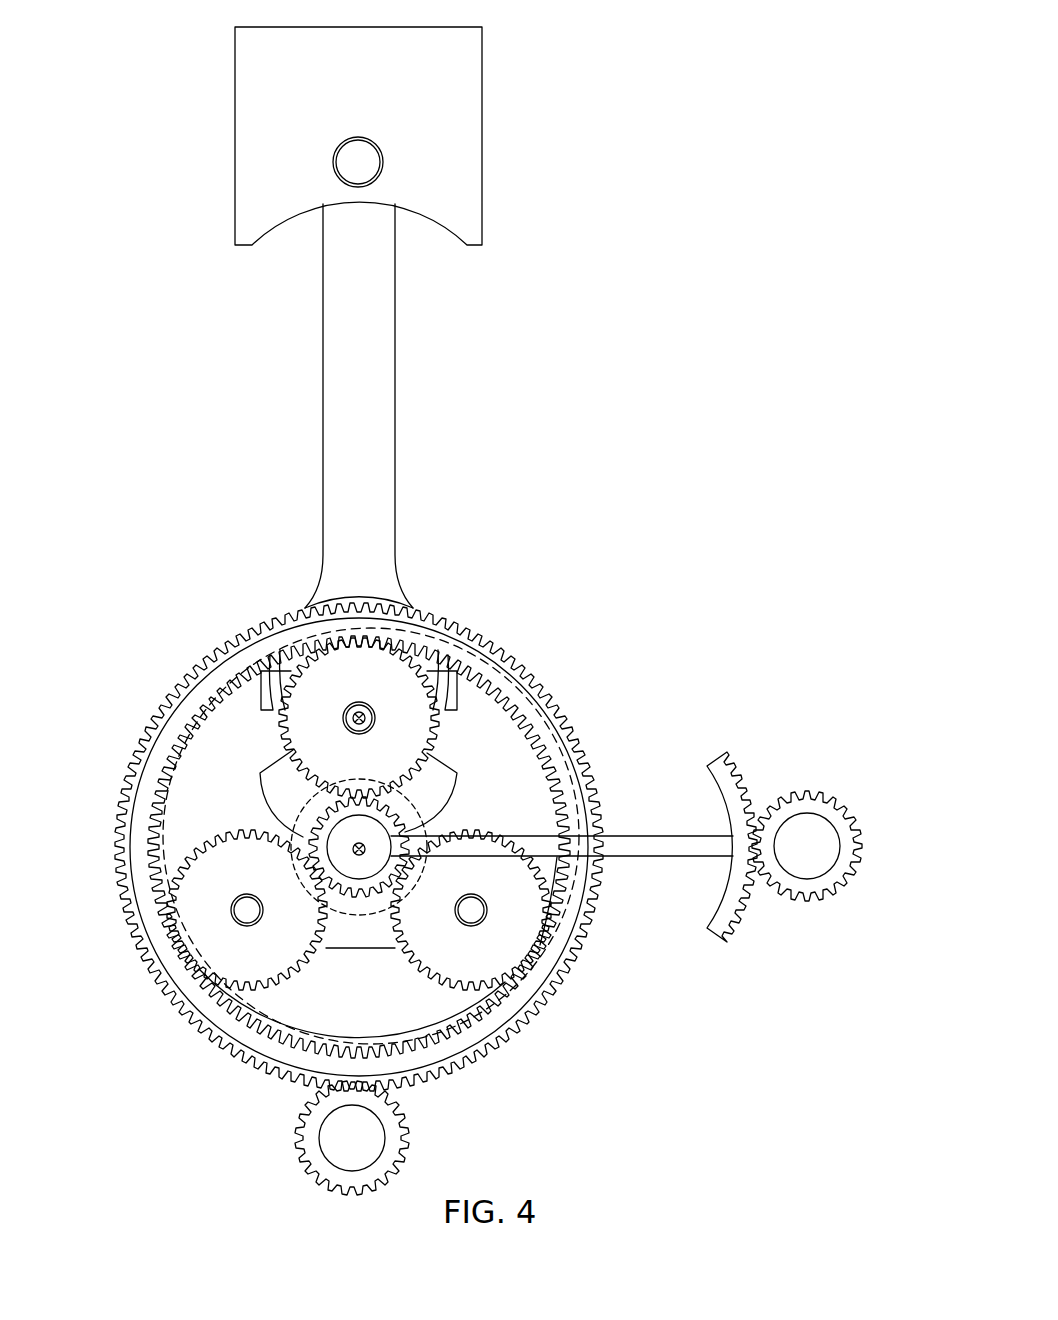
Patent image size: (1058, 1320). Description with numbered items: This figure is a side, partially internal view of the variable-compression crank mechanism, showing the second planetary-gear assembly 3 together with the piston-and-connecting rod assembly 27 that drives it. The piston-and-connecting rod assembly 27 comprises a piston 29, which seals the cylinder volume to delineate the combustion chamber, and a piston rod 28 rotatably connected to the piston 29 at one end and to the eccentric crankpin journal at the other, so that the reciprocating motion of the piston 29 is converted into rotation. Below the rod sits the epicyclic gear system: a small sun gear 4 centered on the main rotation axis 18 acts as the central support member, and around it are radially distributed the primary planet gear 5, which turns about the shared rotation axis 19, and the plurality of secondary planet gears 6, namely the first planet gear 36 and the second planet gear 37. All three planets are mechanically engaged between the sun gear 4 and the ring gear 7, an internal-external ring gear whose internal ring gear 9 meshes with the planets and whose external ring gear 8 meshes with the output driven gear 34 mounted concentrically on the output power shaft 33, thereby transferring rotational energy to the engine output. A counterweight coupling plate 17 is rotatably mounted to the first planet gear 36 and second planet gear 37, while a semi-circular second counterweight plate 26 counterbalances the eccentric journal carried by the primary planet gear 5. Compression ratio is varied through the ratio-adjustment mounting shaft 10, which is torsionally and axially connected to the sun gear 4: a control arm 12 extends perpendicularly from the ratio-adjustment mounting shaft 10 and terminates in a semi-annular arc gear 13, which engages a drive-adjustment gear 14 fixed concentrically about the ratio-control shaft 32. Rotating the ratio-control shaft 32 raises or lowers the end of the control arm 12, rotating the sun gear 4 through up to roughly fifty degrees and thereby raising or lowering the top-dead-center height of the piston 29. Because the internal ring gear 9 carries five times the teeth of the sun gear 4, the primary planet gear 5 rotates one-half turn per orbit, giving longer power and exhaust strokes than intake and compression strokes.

The second planetary-gear assembly 3 is at (636, 628).
The sun gear 4 is at (320, 816).
The primary planet gear 5 is at (359, 718).
The plurality of secondary planet gears 6 is at (359, 910).
The ring gear 7 is at (132, 845).
The external ring gear 8 is at (141, 742).
The internal ring gear 9 is at (181, 740).
The ratio-adjustment mounting shaft 10 is at (357, 844).
The control arm 12 is at (647, 847).
The arc gear 13 is at (725, 799).
The drive-adjustment gear 14 is at (829, 846).
The counterweight coupling plate 17 is at (357, 942).
The main rotation axis 18 is at (366, 850).
The shared rotation axis 19 is at (372, 716).
The second counterweight plate 26 is at (442, 799).
The piston-and-connecting rod assembly 27 is at (132, 349).
The piston rod 28 is at (382, 432).
The piston 29 is at (247, 190).
The ratio-control shaft 32 is at (821, 857).
The output power shaft 33 is at (366, 1150).
The output driven gear 34 is at (332, 1138).
The first planet gear 36 is at (261, 887).
The second planet gear 37 is at (490, 957).